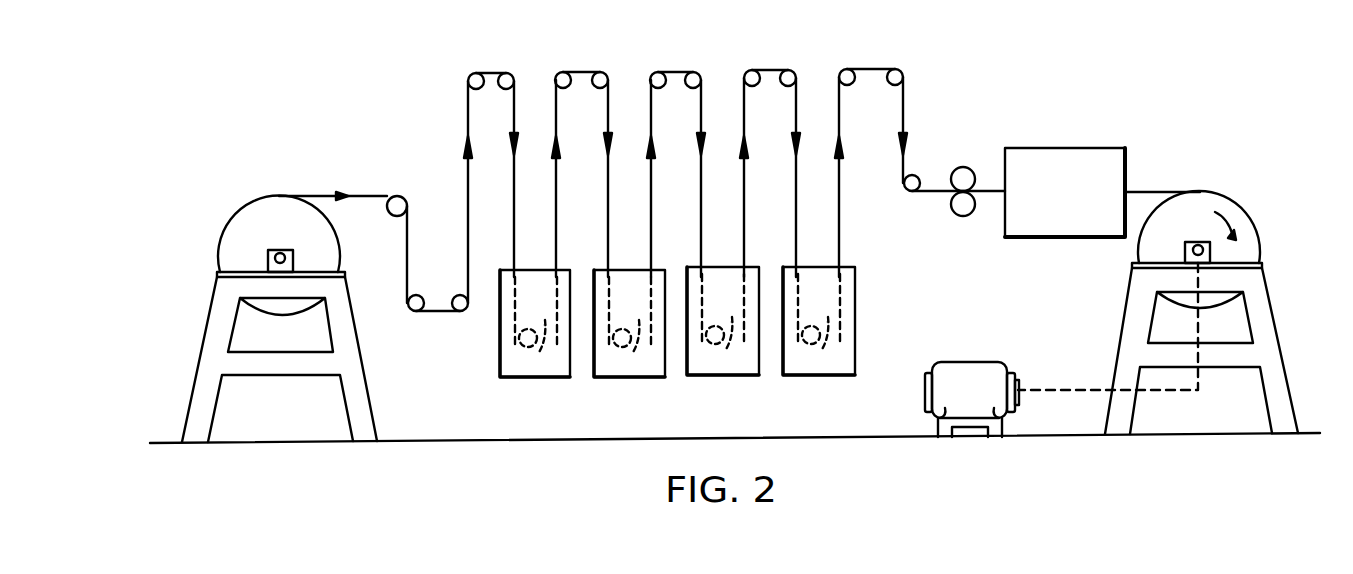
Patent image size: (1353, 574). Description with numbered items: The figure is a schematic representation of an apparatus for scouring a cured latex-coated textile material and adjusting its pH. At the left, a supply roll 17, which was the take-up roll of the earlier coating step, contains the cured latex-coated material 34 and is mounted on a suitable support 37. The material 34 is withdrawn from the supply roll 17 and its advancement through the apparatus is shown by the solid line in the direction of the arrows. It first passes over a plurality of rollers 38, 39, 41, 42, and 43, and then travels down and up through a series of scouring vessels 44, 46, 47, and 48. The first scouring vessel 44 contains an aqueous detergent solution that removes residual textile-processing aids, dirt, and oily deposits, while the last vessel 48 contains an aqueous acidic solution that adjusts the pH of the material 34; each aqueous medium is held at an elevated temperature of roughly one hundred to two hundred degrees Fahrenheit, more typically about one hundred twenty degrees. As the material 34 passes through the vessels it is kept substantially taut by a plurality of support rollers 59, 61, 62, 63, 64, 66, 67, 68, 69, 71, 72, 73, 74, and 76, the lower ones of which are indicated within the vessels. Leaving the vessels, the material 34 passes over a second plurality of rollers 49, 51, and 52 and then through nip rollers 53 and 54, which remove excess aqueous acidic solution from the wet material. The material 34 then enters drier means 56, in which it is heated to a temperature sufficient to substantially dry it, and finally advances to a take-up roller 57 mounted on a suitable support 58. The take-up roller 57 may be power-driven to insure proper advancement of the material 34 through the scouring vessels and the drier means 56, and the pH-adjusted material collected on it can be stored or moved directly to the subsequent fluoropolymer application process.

The supply roll 17 is at (245, 205).
The support 37 is at (213, 323).
The cured latex-coated material 34 is at (320, 196).
The roller 38 is at (402, 197).
The roller 39 is at (417, 295).
The roller 41 is at (458, 312).
The roller 42 is at (473, 75).
The roller 43 is at (508, 78).
The scouring vessel 44 is at (525, 344).
The scouring vessel 46 is at (619, 344).
The scouring vessel 47 is at (712, 342).
The scouring vessel 48 is at (805, 342).
The support roller 59 is at (537, 307).
The support roller 61 is at (539, 352).
The support roller 62 is at (567, 73).
The support roller 63 is at (598, 88).
The support roller 64 is at (630, 306).
The support roller 66 is at (637, 352).
The support roller 67 is at (660, 73).
The support roller 68 is at (692, 88).
The support roller 69 is at (723, 303).
The support roller 71 is at (711, 345).
The support roller 72 is at (757, 72).
The support roller 73 is at (787, 86).
The support roller 74 is at (817, 303).
The support roller 76 is at (808, 345).
The roller 49 is at (850, 70).
The roller 51 is at (893, 86).
The roller 52 is at (914, 175).
The nip roller 53 is at (963, 170).
The nip roller 54 is at (960, 212).
The drier means 56 is at (1067, 152).
The take-up roller 57 is at (1210, 192).
The support 58 is at (1265, 322).